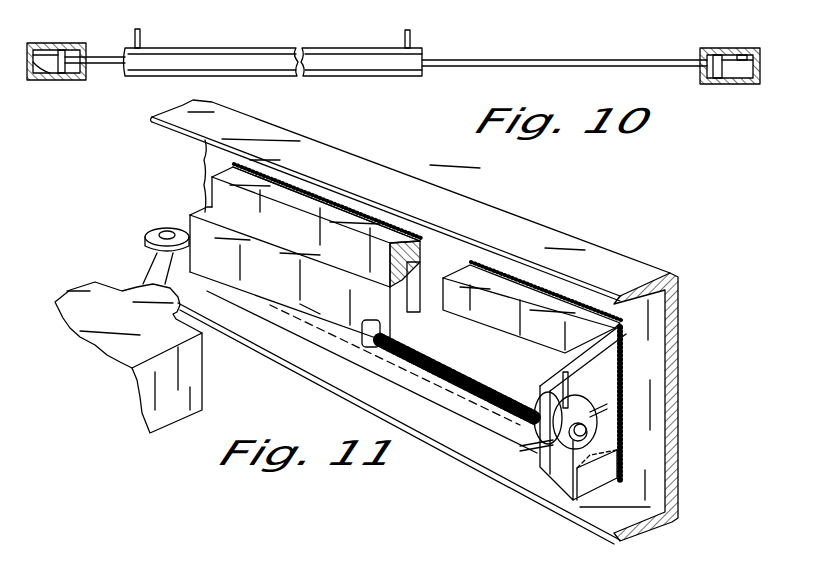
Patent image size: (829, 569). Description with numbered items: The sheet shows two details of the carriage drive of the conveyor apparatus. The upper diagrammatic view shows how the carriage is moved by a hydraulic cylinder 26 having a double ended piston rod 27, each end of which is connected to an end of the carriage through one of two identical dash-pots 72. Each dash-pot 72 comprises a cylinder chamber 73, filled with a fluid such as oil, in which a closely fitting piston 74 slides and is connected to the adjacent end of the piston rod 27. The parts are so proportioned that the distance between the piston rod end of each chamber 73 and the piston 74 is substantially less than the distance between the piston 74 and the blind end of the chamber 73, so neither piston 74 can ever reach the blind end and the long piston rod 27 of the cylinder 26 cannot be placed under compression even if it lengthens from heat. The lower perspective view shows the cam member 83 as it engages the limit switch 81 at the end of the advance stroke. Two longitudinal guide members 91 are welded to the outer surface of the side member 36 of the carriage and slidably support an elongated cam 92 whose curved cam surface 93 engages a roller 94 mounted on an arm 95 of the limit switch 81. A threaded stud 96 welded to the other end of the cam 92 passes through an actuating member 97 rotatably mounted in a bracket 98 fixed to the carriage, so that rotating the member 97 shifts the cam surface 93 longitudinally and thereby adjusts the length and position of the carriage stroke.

In FIG. 10, the hydraulic cylinder 26 is at (248, 48).
In FIG. 10, the piston rod 27 is at (105, 65).
In FIG. 10, the dash-pot 72 is at (44, 43).
In FIG. 10, the cylinder chamber 73 is at (34, 66).
In FIG. 10, the piston 74 is at (61, 73).
In FIG. 11, the side member 36 is at (578, 247).
In FIG. 11, the limit switch 81 is at (168, 413).
In FIG. 11, the cam member 83 is at (318, 312).
In FIG. 11, the longitudinal guide members 91 is at (383, 233).
In FIG. 11, the elongated cam 92 is at (290, 279).
In FIG. 11, the curved cam surface 93 is at (190, 216).
In FIG. 11, the roller 94 is at (145, 229).
In FIG. 11, the arm 95 is at (158, 268).
In FIG. 11, the threaded stud 96 is at (450, 372).
In FIG. 11, the actuating member 97 is at (580, 410).
In FIG. 11, the bracket 98 is at (547, 483).